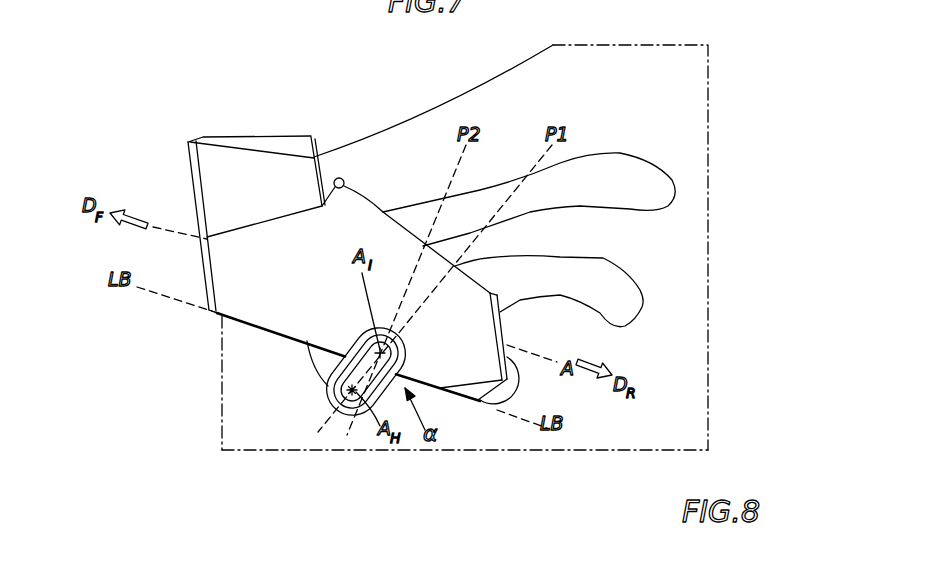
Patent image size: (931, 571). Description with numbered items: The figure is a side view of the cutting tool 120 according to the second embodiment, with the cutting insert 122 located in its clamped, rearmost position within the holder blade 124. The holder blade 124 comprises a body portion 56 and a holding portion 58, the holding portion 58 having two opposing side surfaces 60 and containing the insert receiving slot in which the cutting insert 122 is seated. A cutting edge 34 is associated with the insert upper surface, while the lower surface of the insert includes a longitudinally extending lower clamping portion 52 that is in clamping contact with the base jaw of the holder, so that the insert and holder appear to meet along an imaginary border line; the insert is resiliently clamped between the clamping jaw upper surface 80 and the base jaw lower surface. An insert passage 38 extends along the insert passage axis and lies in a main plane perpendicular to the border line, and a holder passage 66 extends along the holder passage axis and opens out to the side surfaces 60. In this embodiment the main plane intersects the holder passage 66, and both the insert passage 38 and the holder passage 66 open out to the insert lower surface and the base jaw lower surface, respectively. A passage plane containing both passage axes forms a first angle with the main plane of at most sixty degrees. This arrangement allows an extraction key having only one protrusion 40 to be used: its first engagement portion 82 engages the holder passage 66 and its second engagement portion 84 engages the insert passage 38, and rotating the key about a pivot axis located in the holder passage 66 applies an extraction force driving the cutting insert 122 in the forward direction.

The cutting tool 120 is at (188, 65).
The cutting insert 122 is at (163, 123).
The cutting edge 34 is at (188, 142).
The clamping jaw upper surface 80 is at (335, 178).
The holding portion 58 is at (673, 103).
The holder blade 124 is at (720, 285).
The body portion 56 is at (728, 433).
The insert passage 38 is at (348, 335).
The first engagement portion 82 is at (350, 390).
The lower clamping portion 52 is at (217, 313).
The holder passage 66 is at (290, 365).
The side surfaces 60 is at (235, 403).
The protrusion 40 is at (407, 380).
The second engagement portion 84 is at (447, 394).